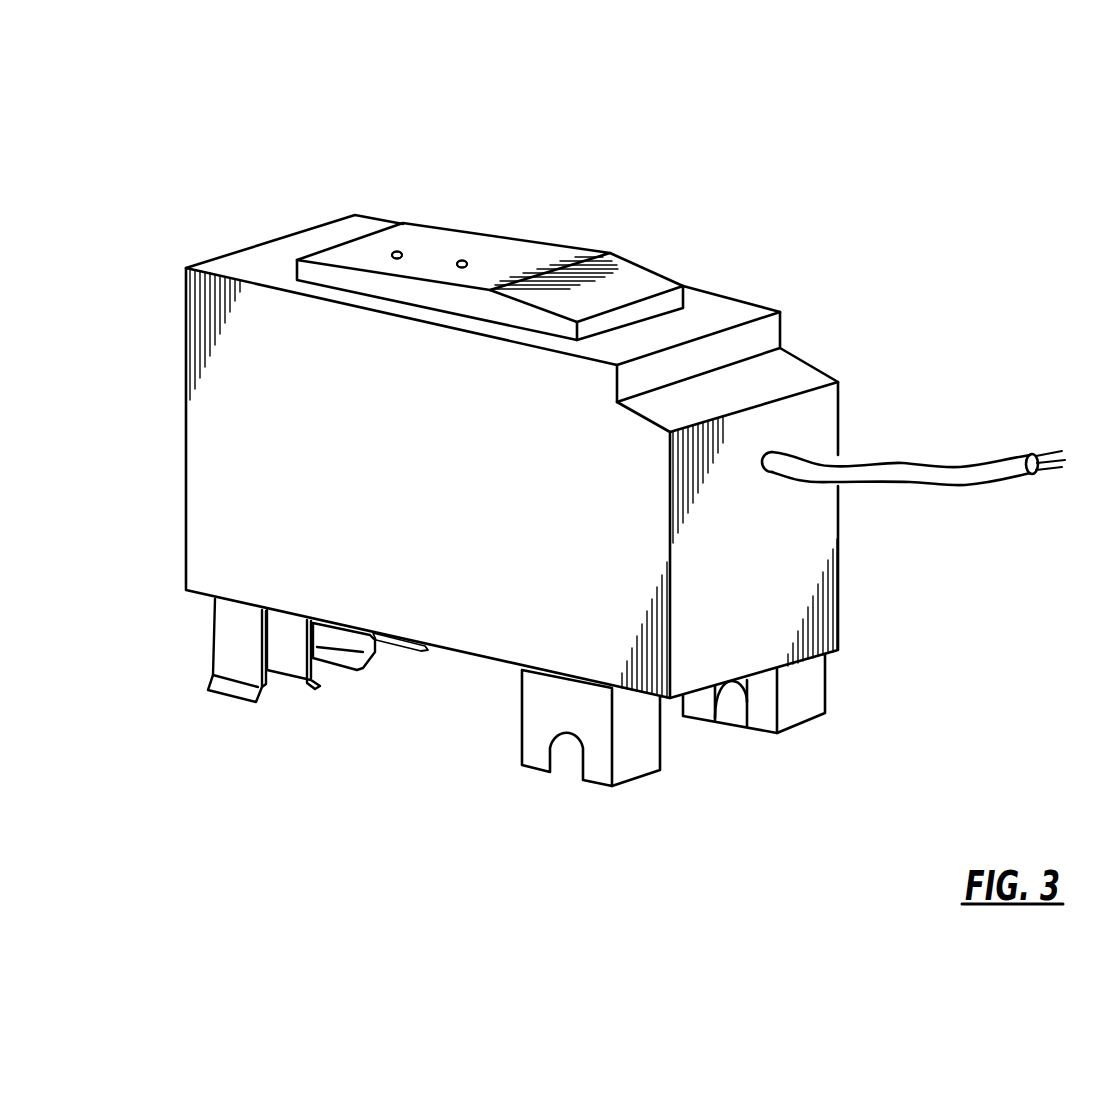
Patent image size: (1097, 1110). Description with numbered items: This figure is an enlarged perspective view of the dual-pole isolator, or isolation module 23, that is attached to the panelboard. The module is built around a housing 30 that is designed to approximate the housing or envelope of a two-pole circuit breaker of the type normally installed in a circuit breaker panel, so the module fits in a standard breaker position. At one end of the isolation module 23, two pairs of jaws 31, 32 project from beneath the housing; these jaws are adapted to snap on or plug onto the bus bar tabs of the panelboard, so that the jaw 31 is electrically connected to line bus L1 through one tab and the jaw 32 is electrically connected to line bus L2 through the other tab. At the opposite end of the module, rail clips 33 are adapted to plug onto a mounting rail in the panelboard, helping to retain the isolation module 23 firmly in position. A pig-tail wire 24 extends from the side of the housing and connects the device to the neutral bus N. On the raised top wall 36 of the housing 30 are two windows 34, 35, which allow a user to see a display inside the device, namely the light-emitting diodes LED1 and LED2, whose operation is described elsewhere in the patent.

The isolation module 23 is at (618, 441).
The top wall 36 is at (594, 124).
The housing 30 is at (440, 444).
The light-emitting diode LED1 is at (398, 251).
The light-emitting diode LED2 is at (464, 260).
The window 34 is at (403, 258).
The window 35 is at (468, 264).
The pig-tail wire 24 is at (961, 473).
The jaw 31 is at (270, 683).
The jaw 32 is at (360, 660).
The rail clips 33 is at (638, 780).